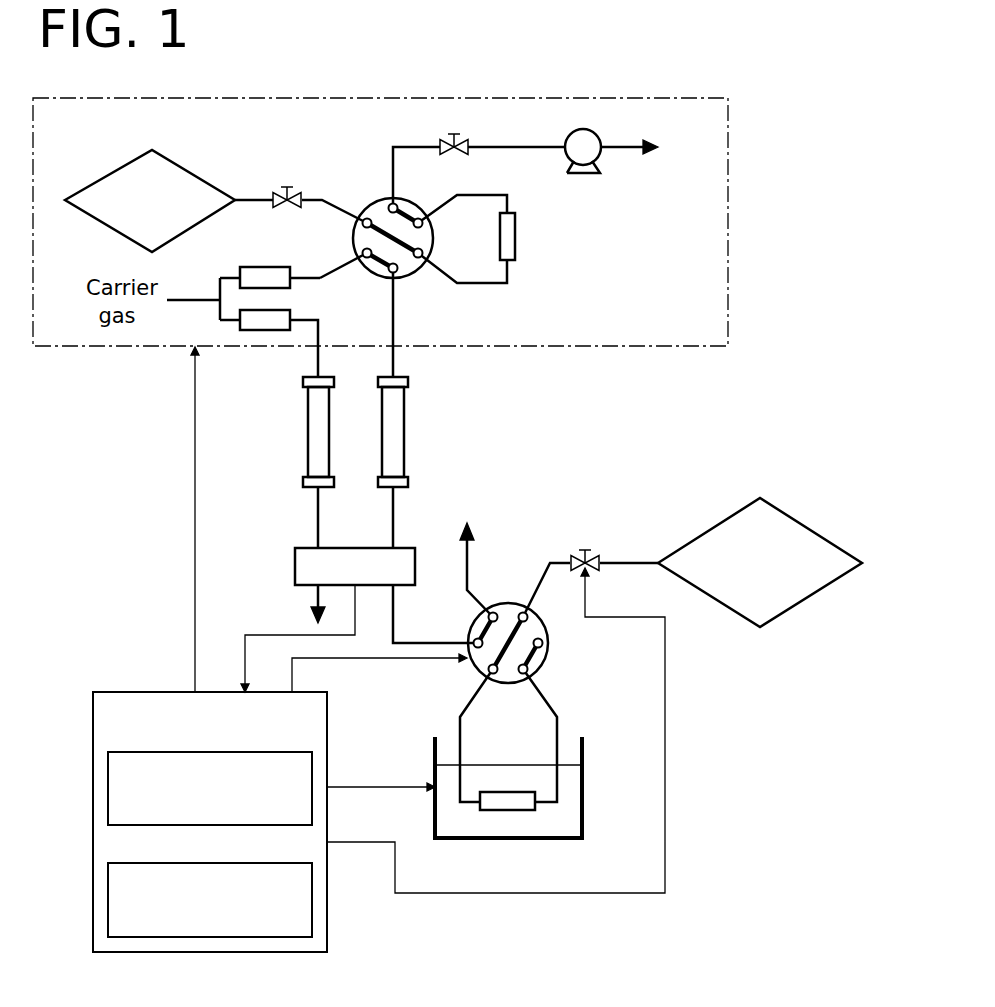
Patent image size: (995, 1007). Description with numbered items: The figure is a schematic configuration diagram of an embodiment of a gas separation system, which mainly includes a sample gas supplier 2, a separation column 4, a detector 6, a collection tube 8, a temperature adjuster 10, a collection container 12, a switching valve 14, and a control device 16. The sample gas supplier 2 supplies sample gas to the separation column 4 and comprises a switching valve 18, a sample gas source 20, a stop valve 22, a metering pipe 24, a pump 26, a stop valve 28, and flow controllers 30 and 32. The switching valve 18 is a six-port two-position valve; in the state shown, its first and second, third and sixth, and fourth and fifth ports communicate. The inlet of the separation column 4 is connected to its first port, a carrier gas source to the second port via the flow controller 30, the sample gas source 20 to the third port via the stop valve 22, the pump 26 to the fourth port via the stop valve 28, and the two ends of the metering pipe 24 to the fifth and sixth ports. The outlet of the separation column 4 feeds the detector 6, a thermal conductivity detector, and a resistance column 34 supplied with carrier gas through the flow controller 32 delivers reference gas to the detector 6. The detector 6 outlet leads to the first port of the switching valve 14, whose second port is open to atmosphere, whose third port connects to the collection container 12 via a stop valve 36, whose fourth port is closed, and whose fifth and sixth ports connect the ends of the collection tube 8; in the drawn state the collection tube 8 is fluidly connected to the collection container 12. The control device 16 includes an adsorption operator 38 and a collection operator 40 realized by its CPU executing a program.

The sample gas supplier 2 is at (635, 98).
The separation column 4 is at (404, 431).
The detector 6 is at (295, 557).
The collection tube 8 is at (510, 805).
The temperature adjuster 10 is at (583, 790).
The collection container 12 is at (802, 520).
The switching valve 14 is at (545, 663).
The control device 16 is at (330, 712).
The switching valve 18 is at (375, 198).
The sample gas source 20 is at (192, 170).
The stop valve 22 is at (300, 195).
The metering pipe 24 is at (515, 235).
The pump 26 is at (588, 173).
The stop valve 28 is at (468, 142).
The flow controller 30 is at (270, 267).
The flow controller 32 is at (262, 332).
The resistance column 34 is at (308, 432).
The stop valve 36 is at (598, 555).
The adsorption operator 38 is at (313, 765).
The collection operator 40 is at (313, 893).